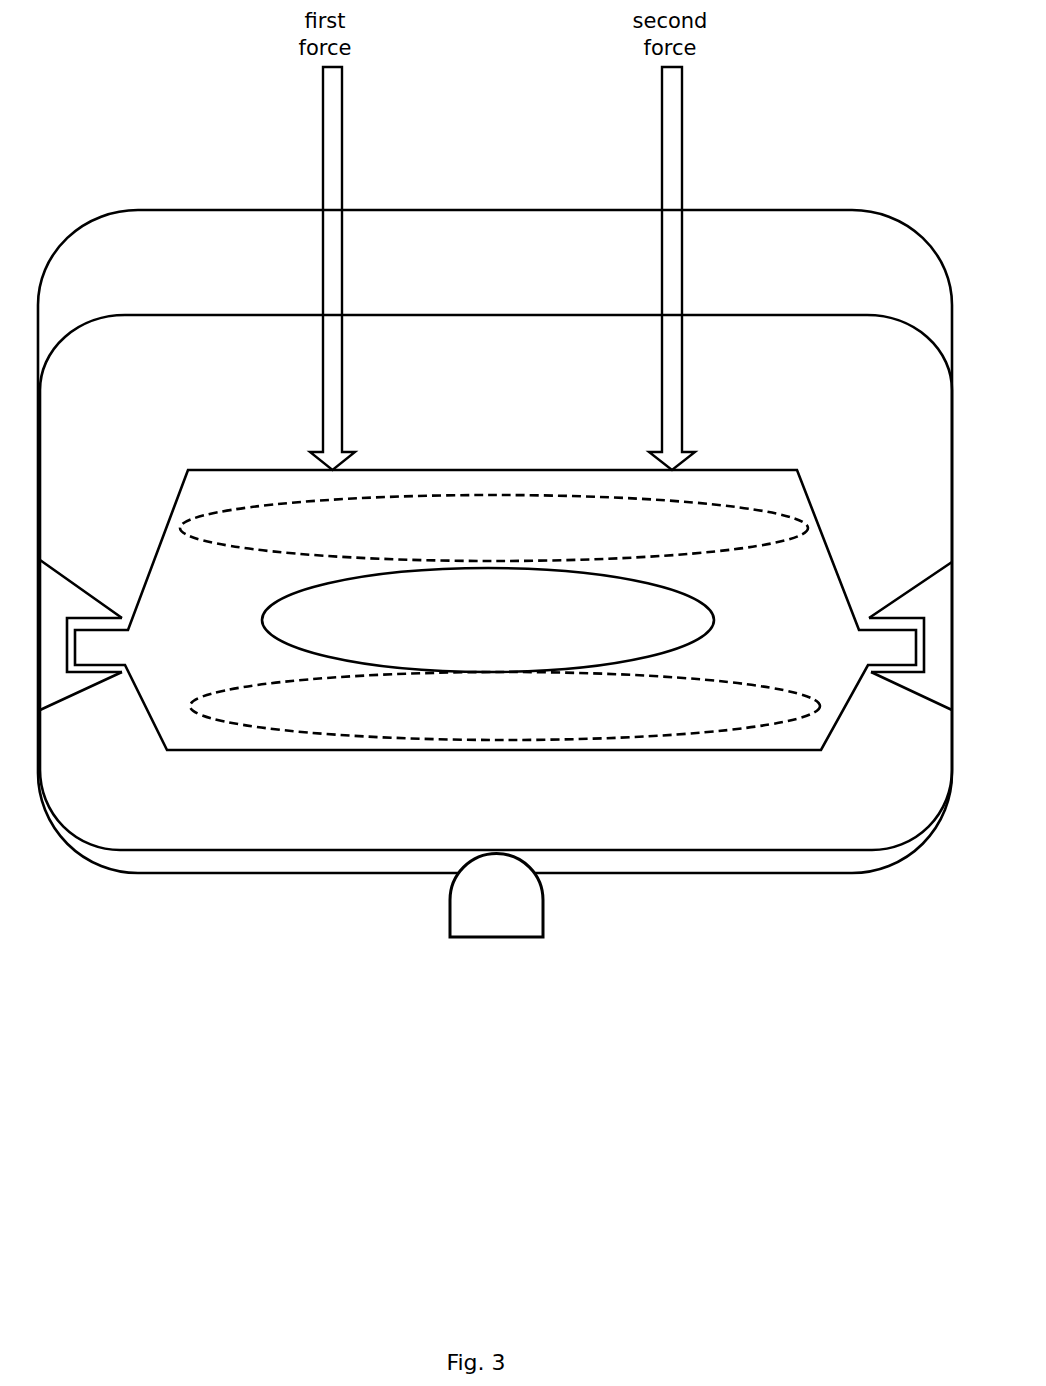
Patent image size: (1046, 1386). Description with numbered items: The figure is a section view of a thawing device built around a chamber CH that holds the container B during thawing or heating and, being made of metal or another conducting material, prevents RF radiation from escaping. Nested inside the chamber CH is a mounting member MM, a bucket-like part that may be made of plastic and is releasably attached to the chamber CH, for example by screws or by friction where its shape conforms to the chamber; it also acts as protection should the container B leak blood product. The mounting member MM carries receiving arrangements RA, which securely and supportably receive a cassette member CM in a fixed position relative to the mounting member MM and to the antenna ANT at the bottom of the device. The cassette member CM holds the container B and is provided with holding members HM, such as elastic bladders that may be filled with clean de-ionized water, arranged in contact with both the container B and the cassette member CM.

The chamber CH is at (495, 541).
The mounting member MM is at (496, 582).
The cassette member CM is at (495, 610).
The receiving arrangements RA is at (57, 598).
The holding members HM is at (500, 617).
The container B is at (488, 620).
The antenna ANT is at (496, 911).